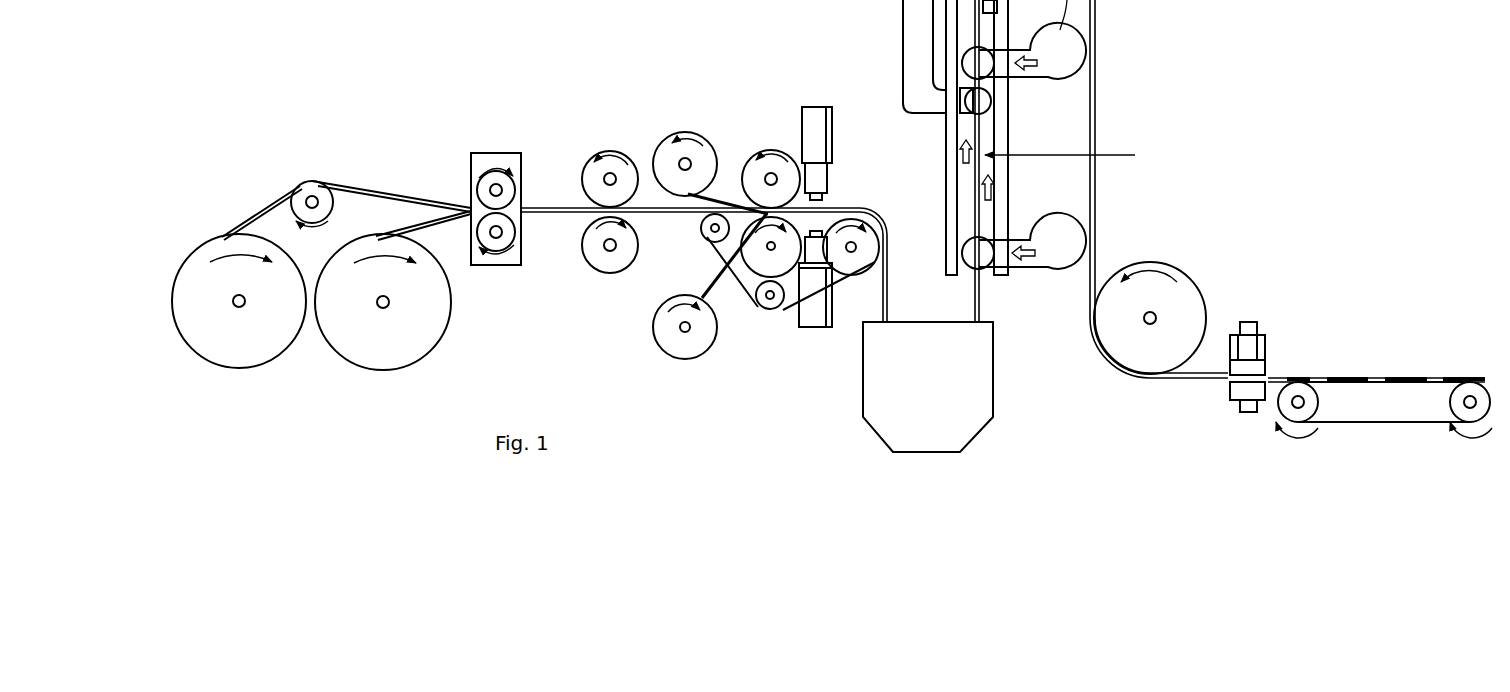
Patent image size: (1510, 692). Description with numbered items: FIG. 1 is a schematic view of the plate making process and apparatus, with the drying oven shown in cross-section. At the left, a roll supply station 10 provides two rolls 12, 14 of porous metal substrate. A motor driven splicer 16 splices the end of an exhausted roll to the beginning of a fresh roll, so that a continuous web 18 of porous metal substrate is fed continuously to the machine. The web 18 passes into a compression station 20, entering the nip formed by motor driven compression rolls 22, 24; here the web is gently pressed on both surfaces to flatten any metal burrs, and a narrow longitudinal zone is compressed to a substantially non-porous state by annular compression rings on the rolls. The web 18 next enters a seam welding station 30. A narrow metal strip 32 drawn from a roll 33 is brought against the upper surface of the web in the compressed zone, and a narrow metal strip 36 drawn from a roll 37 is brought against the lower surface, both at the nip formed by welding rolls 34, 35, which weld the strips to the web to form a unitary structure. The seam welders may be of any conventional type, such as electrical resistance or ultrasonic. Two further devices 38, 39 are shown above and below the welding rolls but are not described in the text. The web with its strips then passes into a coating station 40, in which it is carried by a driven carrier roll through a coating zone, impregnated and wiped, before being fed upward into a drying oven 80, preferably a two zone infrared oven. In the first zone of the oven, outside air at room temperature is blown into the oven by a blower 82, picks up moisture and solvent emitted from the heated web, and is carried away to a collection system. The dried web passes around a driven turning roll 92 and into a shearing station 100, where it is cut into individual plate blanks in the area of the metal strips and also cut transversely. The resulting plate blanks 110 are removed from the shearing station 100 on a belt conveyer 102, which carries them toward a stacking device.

The roll supply station 10 is at (448, 177).
The roll of porous metal substrate 12 is at (200, 356).
The roll of porous metal substrate 14 is at (338, 357).
The motor driven splicer 16 is at (498, 138).
The continuous web of porous metal substrate 18 is at (556, 218).
The compression station 20 is at (612, 138).
The compression roll 22 is at (581, 177).
The compression roll 24 is at (582, 255).
The seam welding station 30 is at (867, 122).
The narrow metal strip 32 is at (718, 196).
The roll 33 is at (711, 139).
The welding roll 34 is at (771, 247).
The welding roll 35 is at (759, 152).
The narrow metal strip 36 is at (696, 267).
The roll 37 is at (654, 330).
The upper doctor device 38 is at (834, 138).
The lower doctor device 39 is at (832, 312).
The coating station 40 is at (850, 389).
The drying oven 80 is at (928, 131).
The blower 82 is at (1040, 230).
The driven turning roll 92 is at (1158, 262).
The shearing station 100 is at (1250, 322).
The belt conveyer 102 is at (1388, 424).
The plate blanks 110 is at (1460, 376).